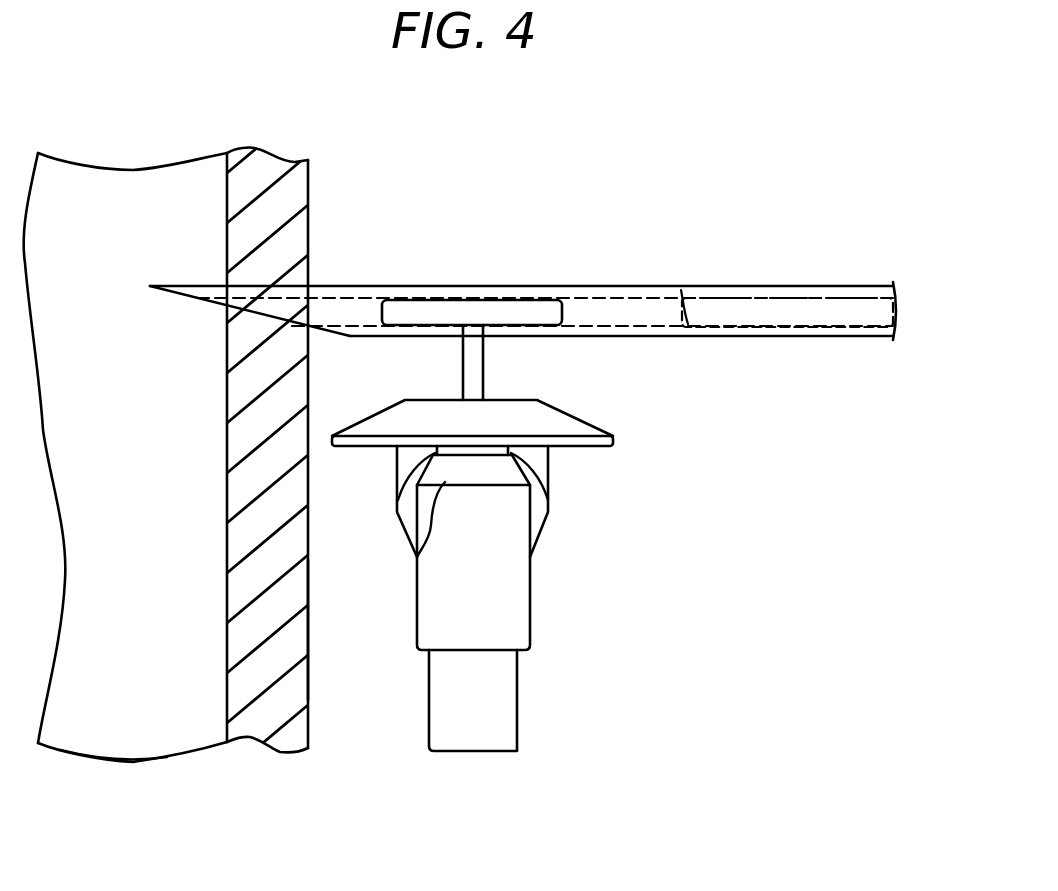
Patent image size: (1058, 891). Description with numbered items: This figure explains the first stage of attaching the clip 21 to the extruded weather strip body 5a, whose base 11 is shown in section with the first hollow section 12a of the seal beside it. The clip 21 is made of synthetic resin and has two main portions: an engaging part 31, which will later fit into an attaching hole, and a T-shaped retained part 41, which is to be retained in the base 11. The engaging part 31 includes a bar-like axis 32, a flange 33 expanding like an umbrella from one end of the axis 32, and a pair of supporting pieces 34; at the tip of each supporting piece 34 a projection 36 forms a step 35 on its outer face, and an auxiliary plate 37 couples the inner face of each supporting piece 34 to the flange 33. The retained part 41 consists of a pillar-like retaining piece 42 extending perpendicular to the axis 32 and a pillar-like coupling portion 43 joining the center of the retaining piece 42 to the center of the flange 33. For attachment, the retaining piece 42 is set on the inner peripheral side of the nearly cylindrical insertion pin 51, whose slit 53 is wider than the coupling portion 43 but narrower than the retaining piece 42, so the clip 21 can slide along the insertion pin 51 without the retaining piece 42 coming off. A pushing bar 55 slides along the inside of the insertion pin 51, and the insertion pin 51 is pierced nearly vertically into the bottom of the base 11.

The weather strip body 5a is at (332, 643).
The base 11 is at (308, 727).
The first hollow section 12a is at (149, 768).
The clip 21 is at (536, 540).
The engaging part 31 is at (517, 751).
The axis 32 is at (550, 505).
The flange 33 is at (613, 445).
The supporting piece 34 is at (500, 620).
The step 35 is at (398, 489).
The projection 36 is at (418, 553).
The auxiliary plate 37 is at (548, 489).
The retained part 41 is at (533, 352).
The retaining piece 42 is at (565, 322).
The coupling portion 43 is at (482, 352).
The insertion pin 51 is at (643, 286).
The slit 53 is at (793, 334).
The pushing bar 55 is at (690, 283).